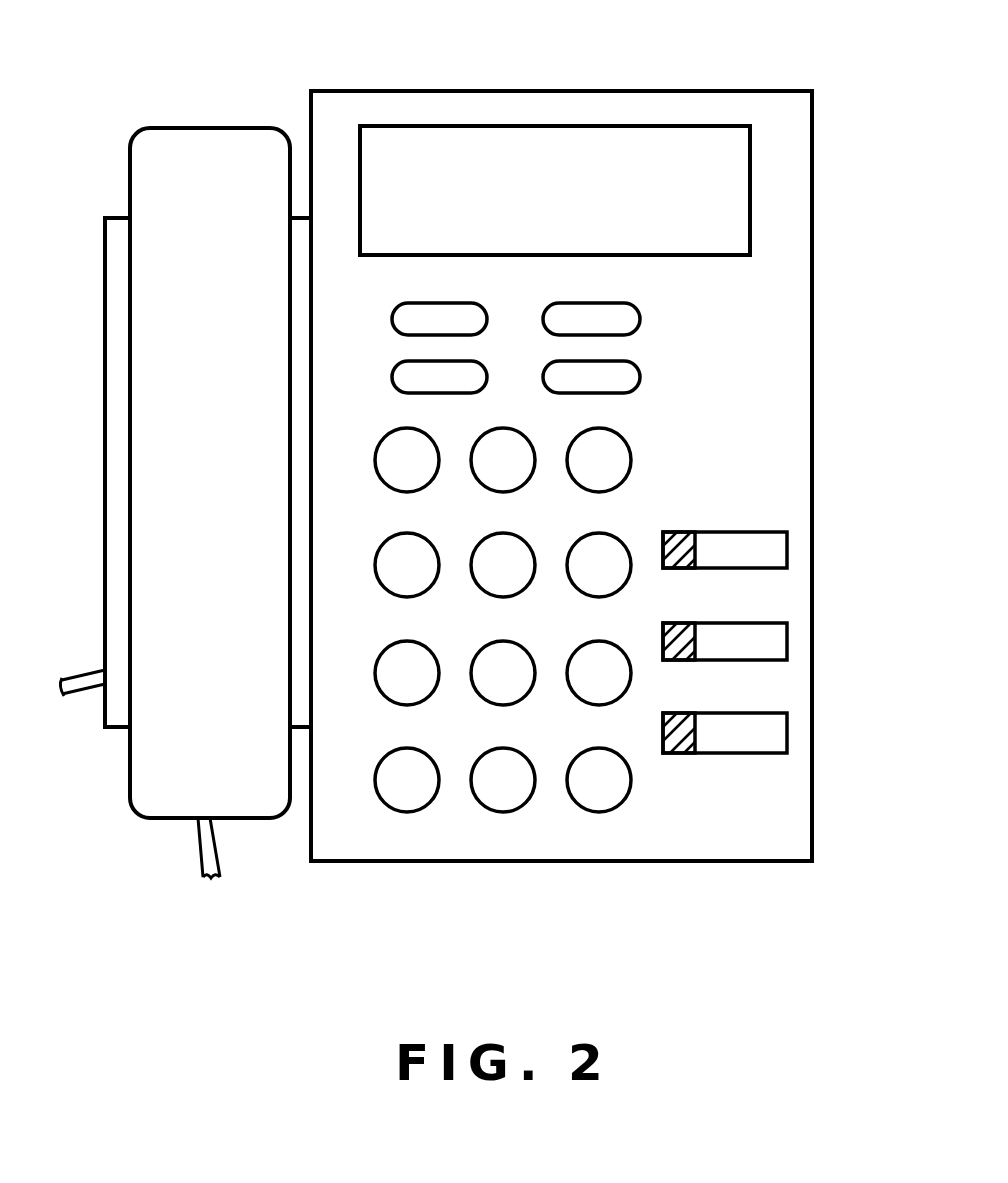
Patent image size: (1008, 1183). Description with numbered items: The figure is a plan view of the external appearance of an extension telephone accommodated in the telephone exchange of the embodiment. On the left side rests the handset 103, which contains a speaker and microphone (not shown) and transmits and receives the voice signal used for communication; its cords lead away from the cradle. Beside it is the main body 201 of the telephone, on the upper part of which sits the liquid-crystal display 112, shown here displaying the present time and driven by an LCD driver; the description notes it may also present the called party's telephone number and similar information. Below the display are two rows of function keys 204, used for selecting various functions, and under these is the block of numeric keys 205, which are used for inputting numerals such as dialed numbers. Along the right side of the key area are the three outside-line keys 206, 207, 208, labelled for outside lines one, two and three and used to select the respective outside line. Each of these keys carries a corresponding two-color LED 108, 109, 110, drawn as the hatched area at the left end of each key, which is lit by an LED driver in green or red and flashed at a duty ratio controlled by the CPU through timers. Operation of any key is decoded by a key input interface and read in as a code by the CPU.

The handset 103 is at (222, 128).
The telephone main body 201 is at (457, 91).
The liquid-crystal display 112 is at (697, 127).
The function keys 204 is at (655, 302).
The numeric keys 205 is at (630, 452).
The two-color LED 110 is at (663, 540).
The two-color LED 109 is at (663, 645).
The two-color LED 108 is at (680, 753).
The outside-line key 208 is at (787, 548).
The outside-line key 207 is at (787, 643).
The outside-line key 206 is at (787, 735).